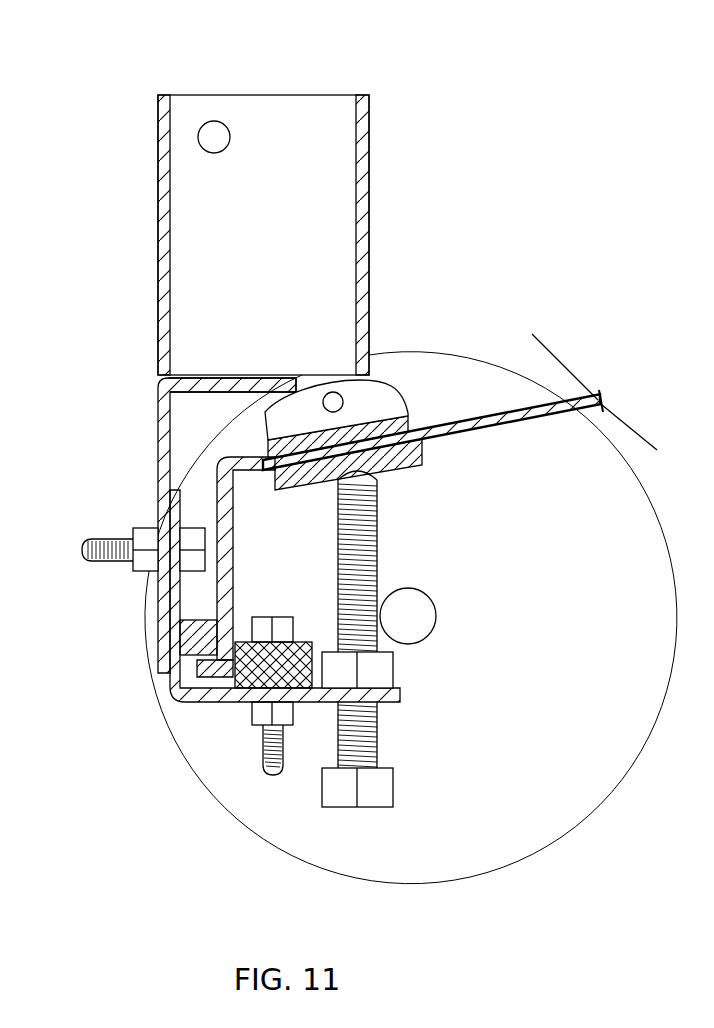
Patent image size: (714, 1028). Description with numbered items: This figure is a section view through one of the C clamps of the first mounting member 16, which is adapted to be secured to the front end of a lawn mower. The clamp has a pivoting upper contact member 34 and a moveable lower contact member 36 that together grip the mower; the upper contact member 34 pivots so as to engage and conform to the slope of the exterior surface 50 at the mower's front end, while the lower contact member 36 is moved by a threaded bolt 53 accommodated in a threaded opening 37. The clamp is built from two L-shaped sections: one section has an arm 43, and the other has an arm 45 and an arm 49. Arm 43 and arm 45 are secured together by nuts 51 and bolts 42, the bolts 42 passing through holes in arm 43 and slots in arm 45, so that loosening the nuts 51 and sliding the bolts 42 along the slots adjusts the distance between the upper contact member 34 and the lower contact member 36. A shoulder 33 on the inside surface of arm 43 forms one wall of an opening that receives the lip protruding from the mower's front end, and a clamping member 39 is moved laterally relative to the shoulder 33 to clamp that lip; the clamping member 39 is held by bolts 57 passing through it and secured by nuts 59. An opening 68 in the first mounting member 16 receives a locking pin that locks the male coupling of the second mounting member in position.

The first mounting member 16 is at (300, 165).
The opening 68 is at (213, 128).
The arm 49 is at (246, 375).
The arm 45 is at (162, 443).
The nuts 51 is at (147, 540).
The bolts 42 is at (99, 557).
The arm 43 is at (176, 610).
The shoulder 33 is at (200, 640).
The clamping member 39 is at (255, 668).
The nuts 59 is at (267, 712).
The bolts 57 is at (273, 763).
The threaded opening 37 is at (378, 651).
The threaded bolt 53 is at (370, 785).
The lower contact member 36 is at (402, 464).
The upper contact member 34 is at (385, 403).
The exterior surface 50 is at (494, 413).